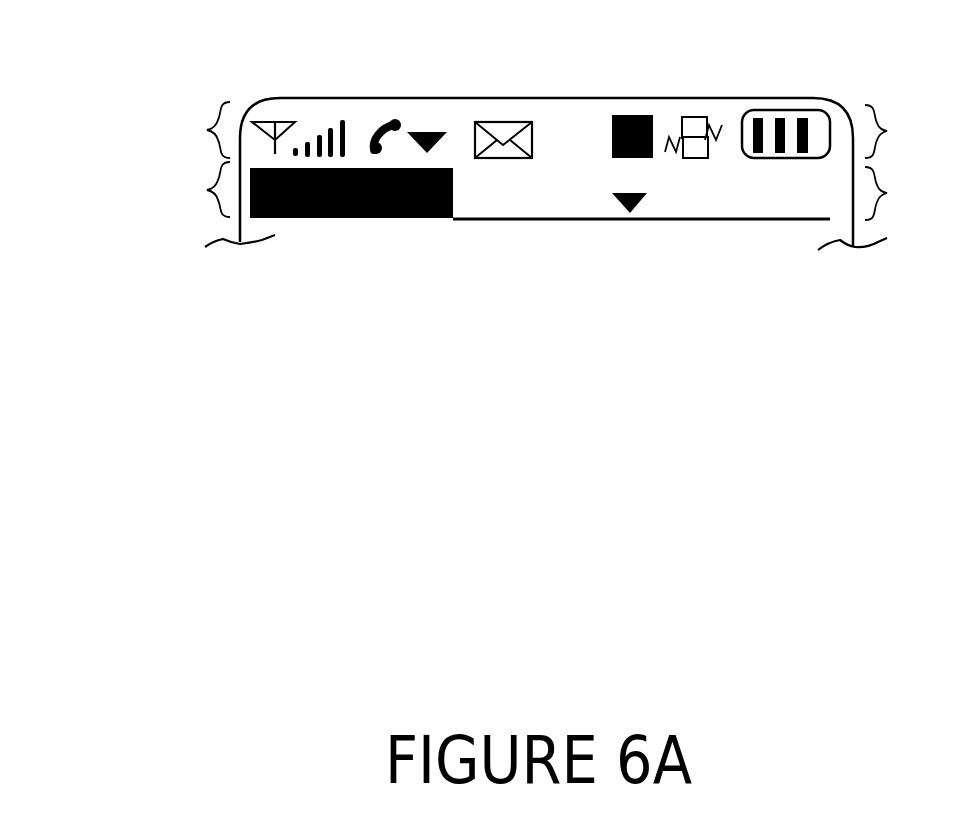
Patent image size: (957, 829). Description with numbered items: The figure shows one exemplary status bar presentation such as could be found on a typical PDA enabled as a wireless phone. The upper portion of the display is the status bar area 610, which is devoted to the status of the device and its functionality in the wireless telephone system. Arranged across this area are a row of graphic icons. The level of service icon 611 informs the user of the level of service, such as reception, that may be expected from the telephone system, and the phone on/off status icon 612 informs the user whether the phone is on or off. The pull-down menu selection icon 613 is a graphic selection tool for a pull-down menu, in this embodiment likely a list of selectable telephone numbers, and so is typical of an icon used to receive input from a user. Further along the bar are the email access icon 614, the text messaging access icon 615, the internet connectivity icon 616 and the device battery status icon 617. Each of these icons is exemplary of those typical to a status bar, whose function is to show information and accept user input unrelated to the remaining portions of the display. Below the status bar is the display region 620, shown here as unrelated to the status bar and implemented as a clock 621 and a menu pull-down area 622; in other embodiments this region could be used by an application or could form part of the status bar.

The status bar area 610 is at (191, 159).
The level of service icon 611 is at (307, 130).
The phone on/off status icon 612 is at (390, 120).
The pull-down menu selection icon 613 is at (440, 133).
The email access icon 614 is at (522, 122).
The text messaging access icon 615 is at (630, 115).
The internet connectivity icon 616 is at (693, 117).
The device battery status icon 617 is at (785, 110).
The display region 620 is at (901, 162).
The clock 621 is at (308, 218).
The menu pull-down area 622 is at (694, 200).